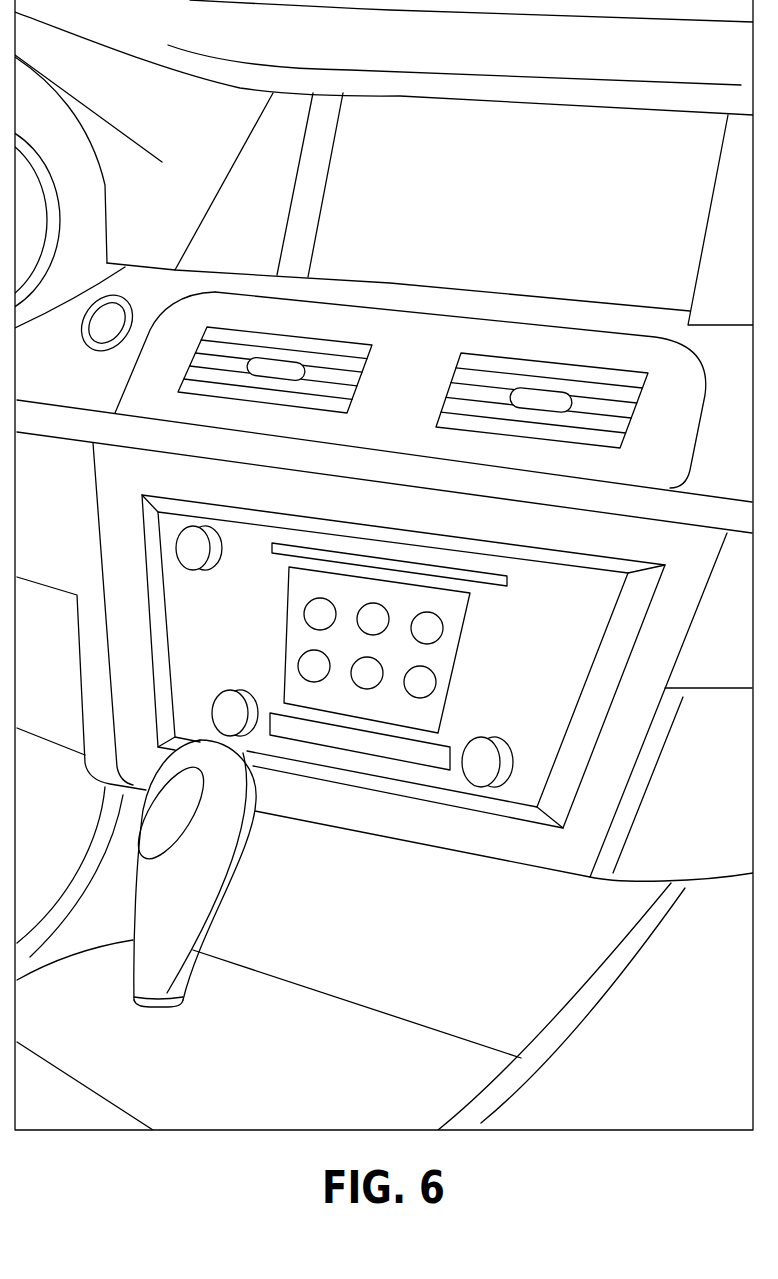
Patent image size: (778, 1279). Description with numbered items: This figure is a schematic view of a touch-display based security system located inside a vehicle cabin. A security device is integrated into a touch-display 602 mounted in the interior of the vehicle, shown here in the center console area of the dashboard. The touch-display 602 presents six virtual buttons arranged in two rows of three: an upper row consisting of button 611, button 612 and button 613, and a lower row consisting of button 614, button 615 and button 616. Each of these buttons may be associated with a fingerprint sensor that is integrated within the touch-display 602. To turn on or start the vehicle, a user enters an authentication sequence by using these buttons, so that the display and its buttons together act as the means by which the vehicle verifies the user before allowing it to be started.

The touch-display 602 is at (472, 663).
The button 611 is at (317, 614).
The button 612 is at (375, 616).
The button 613 is at (432, 630).
The button 614 is at (314, 664).
The button 615 is at (368, 674).
The button 616 is at (424, 684).